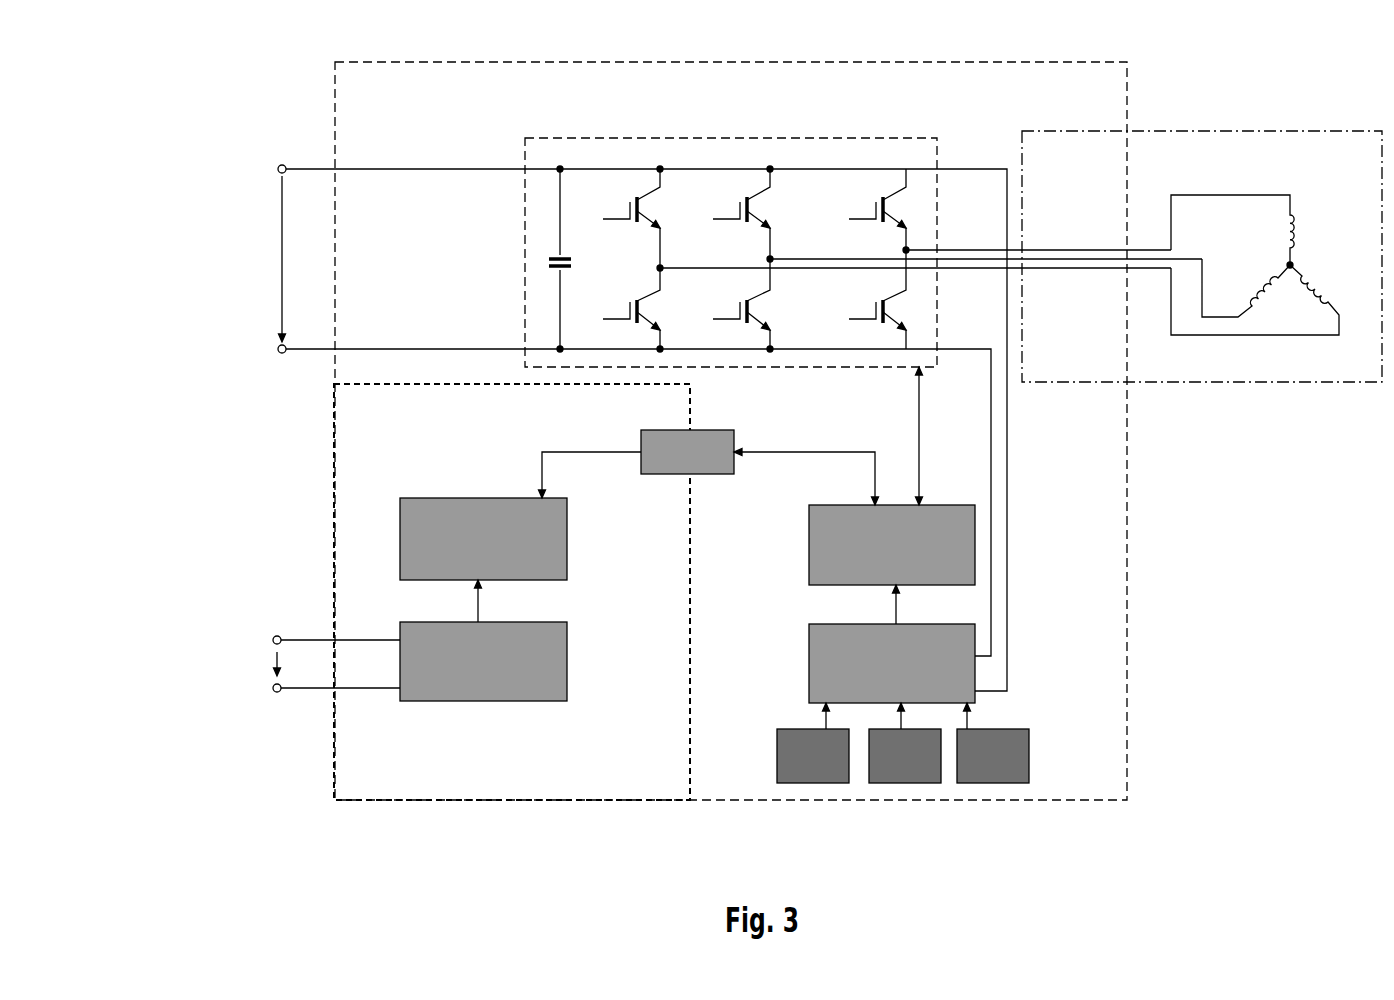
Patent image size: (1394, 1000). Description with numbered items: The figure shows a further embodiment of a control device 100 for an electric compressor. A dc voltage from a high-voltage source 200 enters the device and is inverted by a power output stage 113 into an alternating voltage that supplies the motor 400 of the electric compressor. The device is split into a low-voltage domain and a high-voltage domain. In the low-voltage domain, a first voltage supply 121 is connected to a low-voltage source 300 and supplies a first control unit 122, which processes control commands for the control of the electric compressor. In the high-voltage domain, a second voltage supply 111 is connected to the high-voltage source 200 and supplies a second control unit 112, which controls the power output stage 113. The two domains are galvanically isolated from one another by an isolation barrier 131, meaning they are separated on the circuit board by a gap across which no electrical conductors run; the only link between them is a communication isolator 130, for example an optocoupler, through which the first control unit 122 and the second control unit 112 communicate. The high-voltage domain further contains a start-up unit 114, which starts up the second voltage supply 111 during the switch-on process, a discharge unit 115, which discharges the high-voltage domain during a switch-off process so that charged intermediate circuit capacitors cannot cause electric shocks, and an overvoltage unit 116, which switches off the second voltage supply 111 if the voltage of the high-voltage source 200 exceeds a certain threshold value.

The control device 100 is at (338, 97).
The second voltage supply 111 is at (980, 673).
The second control unit 112 is at (991, 545).
The power output stage 113 is at (948, 130).
The start-up unit 114 is at (805, 792).
The discharge unit 115 is at (910, 792).
The overvoltage unit 116 is at (1002, 792).
The first voltage supply 121 is at (487, 709).
The first control unit 122 is at (398, 506).
The communication isolator 130 is at (678, 477).
The isolation barrier 131 is at (682, 403).
The high-voltage source 200 is at (265, 222).
The low-voltage source 300 is at (250, 671).
The motor 400 is at (1223, 182).